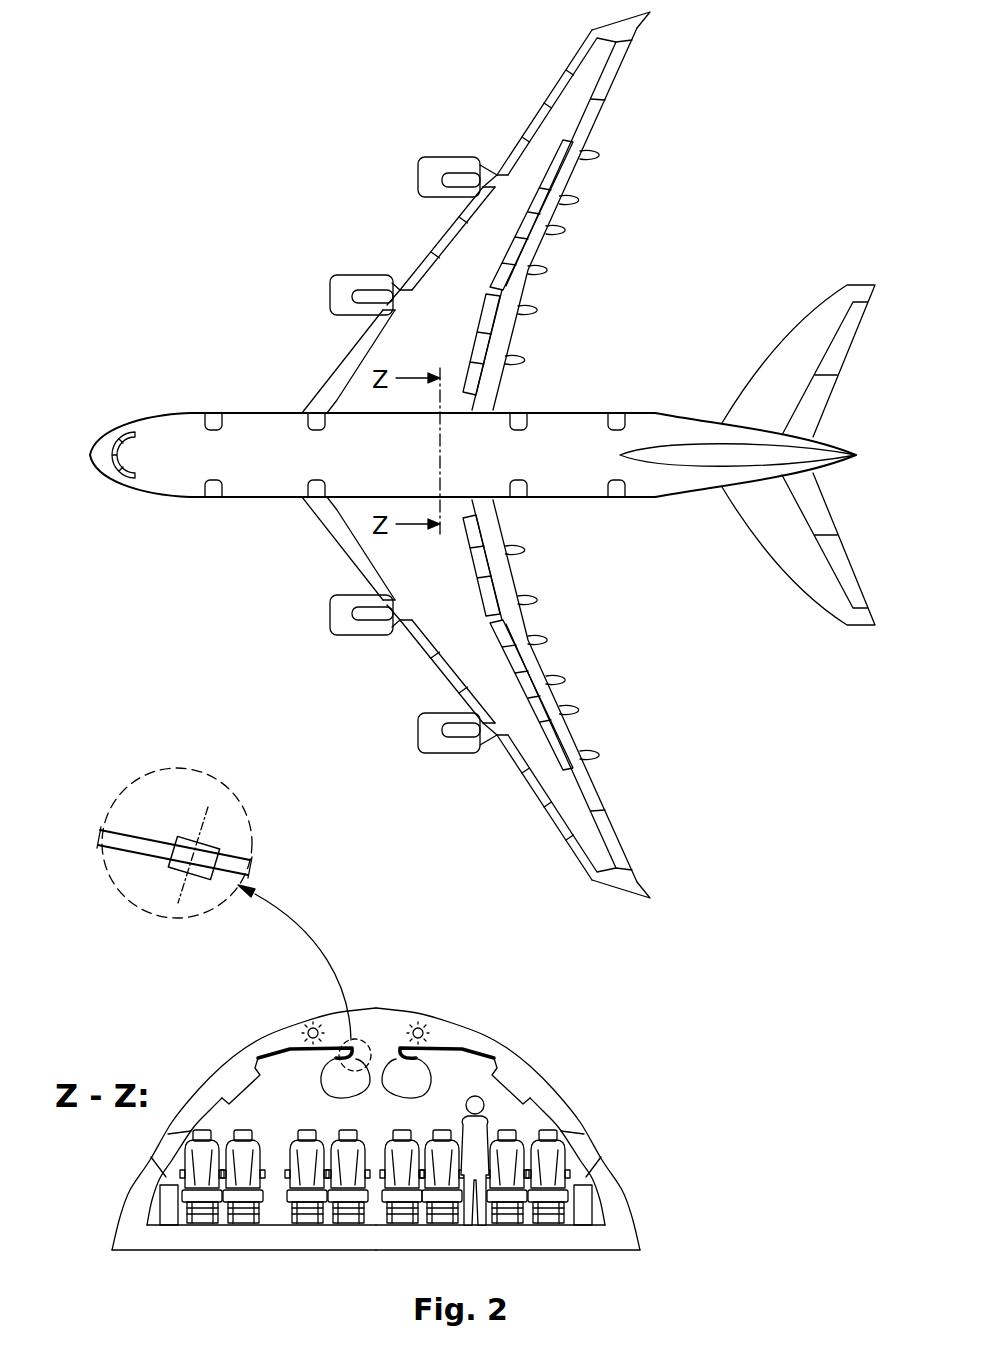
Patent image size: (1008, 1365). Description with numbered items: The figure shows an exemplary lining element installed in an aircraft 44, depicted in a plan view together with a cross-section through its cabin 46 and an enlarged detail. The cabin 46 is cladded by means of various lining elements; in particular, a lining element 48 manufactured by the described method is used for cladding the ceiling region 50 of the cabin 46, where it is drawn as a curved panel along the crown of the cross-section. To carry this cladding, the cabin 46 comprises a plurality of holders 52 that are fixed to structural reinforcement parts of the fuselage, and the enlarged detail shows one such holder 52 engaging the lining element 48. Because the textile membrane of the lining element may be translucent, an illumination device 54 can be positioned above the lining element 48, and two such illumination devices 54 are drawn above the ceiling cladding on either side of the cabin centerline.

The aircraft 44 is at (268, 158).
The cabin 46 is at (483, 442).
The lining element 48 is at (118, 850).
The ceiling region 50 is at (210, 1055).
The holder 52 is at (222, 850).
The illumination device 54 is at (310, 1028).